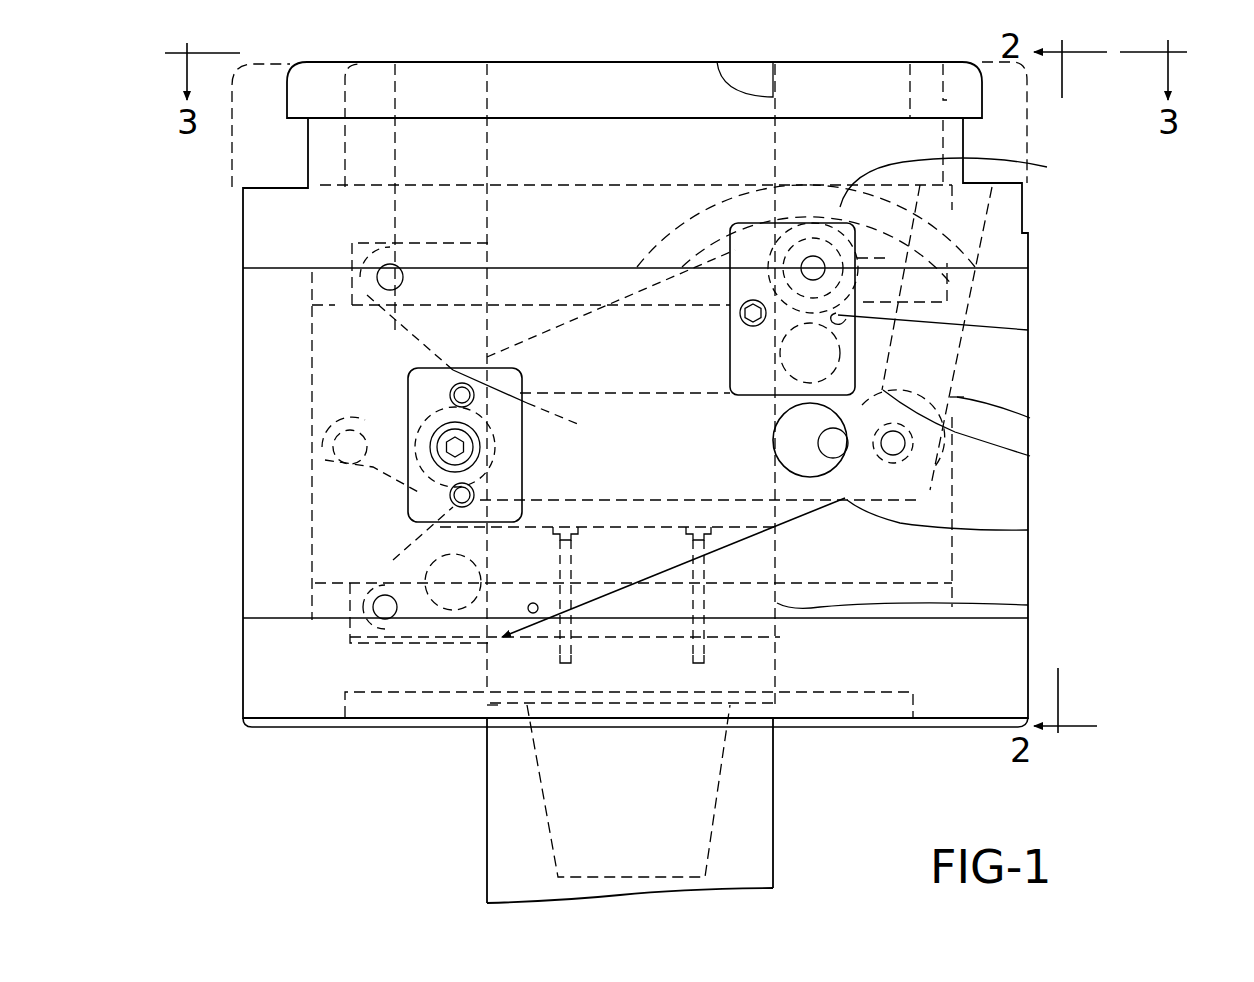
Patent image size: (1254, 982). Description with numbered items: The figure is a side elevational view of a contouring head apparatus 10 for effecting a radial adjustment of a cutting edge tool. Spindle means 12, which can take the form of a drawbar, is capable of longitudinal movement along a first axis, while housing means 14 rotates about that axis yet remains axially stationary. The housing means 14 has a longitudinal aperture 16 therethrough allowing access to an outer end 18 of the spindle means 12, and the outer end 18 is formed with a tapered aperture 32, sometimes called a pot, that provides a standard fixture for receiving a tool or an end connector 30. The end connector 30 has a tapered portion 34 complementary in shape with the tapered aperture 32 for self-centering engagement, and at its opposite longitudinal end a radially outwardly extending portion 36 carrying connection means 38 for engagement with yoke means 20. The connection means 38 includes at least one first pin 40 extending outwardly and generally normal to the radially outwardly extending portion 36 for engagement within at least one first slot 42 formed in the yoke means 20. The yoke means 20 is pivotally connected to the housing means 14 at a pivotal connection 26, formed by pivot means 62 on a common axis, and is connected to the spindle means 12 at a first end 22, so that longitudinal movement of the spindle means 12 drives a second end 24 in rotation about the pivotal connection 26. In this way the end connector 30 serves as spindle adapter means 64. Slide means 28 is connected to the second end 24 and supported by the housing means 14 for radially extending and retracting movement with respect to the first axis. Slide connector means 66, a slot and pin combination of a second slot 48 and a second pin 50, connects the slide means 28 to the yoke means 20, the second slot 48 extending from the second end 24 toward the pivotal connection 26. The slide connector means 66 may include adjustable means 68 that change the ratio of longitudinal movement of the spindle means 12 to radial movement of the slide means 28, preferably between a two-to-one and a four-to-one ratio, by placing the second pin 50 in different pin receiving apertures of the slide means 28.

The contouring head apparatus 10 is at (1150, 247).
The spindle means 12 is at (777, 818).
The housing means 14 is at (1034, 374).
The longitudinal aperture 16 is at (717, 62).
The outer end 18 is at (750, 686).
The yoke means 20 is at (1040, 418).
The first end 22 is at (354, 413).
The second end 24 is at (1050, 168).
The pivotal connection 26 is at (1028, 530).
The slide means 28 is at (232, 165).
The end connector 30 is at (752, 557).
The tapered aperture 32 is at (558, 832).
The tapered portion 34 is at (545, 785).
The radially outwardly extending portion 36 is at (403, 573).
The connection means 38 is at (437, 563).
The first pin 40 is at (485, 457).
The first slot 42 is at (503, 423).
The second slot 48 is at (1035, 330).
The second pin 50 is at (803, 237).
The pivot means 62 is at (832, 467).
The spindle adapter means 64 is at (1035, 605).
The slide connector means 66 is at (1035, 457).
The adjustable means 68 is at (768, 338).